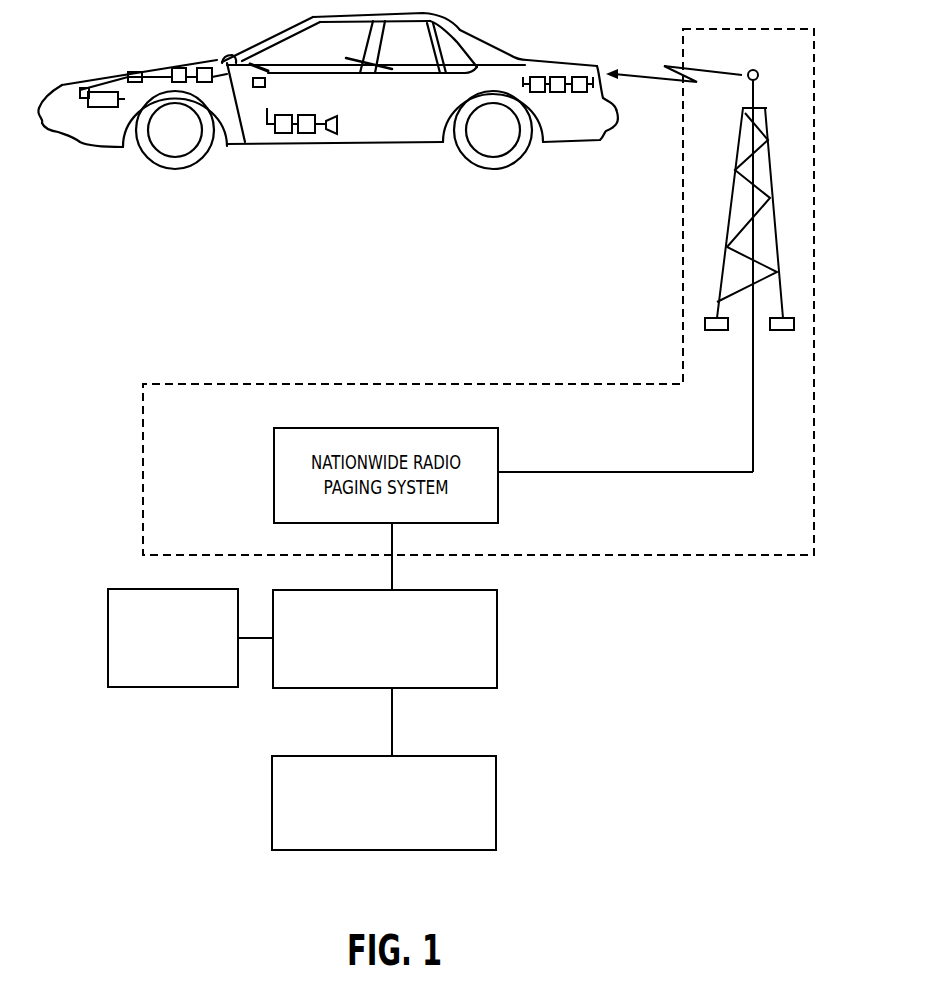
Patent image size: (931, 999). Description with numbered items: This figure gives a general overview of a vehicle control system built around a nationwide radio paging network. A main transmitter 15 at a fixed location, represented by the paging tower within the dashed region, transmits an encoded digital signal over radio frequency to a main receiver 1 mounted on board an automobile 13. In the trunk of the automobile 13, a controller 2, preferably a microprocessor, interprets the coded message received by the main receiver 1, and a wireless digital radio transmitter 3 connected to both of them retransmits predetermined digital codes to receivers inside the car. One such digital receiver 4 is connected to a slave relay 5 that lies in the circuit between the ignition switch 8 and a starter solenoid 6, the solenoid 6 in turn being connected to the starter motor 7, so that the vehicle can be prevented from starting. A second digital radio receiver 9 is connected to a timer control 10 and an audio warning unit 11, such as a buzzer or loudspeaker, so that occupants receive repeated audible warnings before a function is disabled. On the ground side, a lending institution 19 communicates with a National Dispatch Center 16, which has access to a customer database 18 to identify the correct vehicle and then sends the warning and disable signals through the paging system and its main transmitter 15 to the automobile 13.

The main receiver 1 is at (580, 77).
The controller 2 is at (558, 77).
The wireless digital radio transmitter 3 is at (537, 77).
The digital receiver 4 is at (206, 68).
The slave relay 5 is at (178, 68).
The starter solenoid 6 is at (133, 71).
The starter motor 7 is at (98, 98).
The ignition switch 8 is at (257, 78).
The digital radio receiver 9 is at (280, 133).
The timer control 10 is at (306, 133).
The audio warning unit 11 is at (330, 133).
The automobile 13 is at (567, 142).
The main transmitter 15 is at (668, 555).
The National Dispatch Center 16 is at (497, 648).
The customer database 18 is at (169, 687).
The lending institution 19 is at (325, 850).